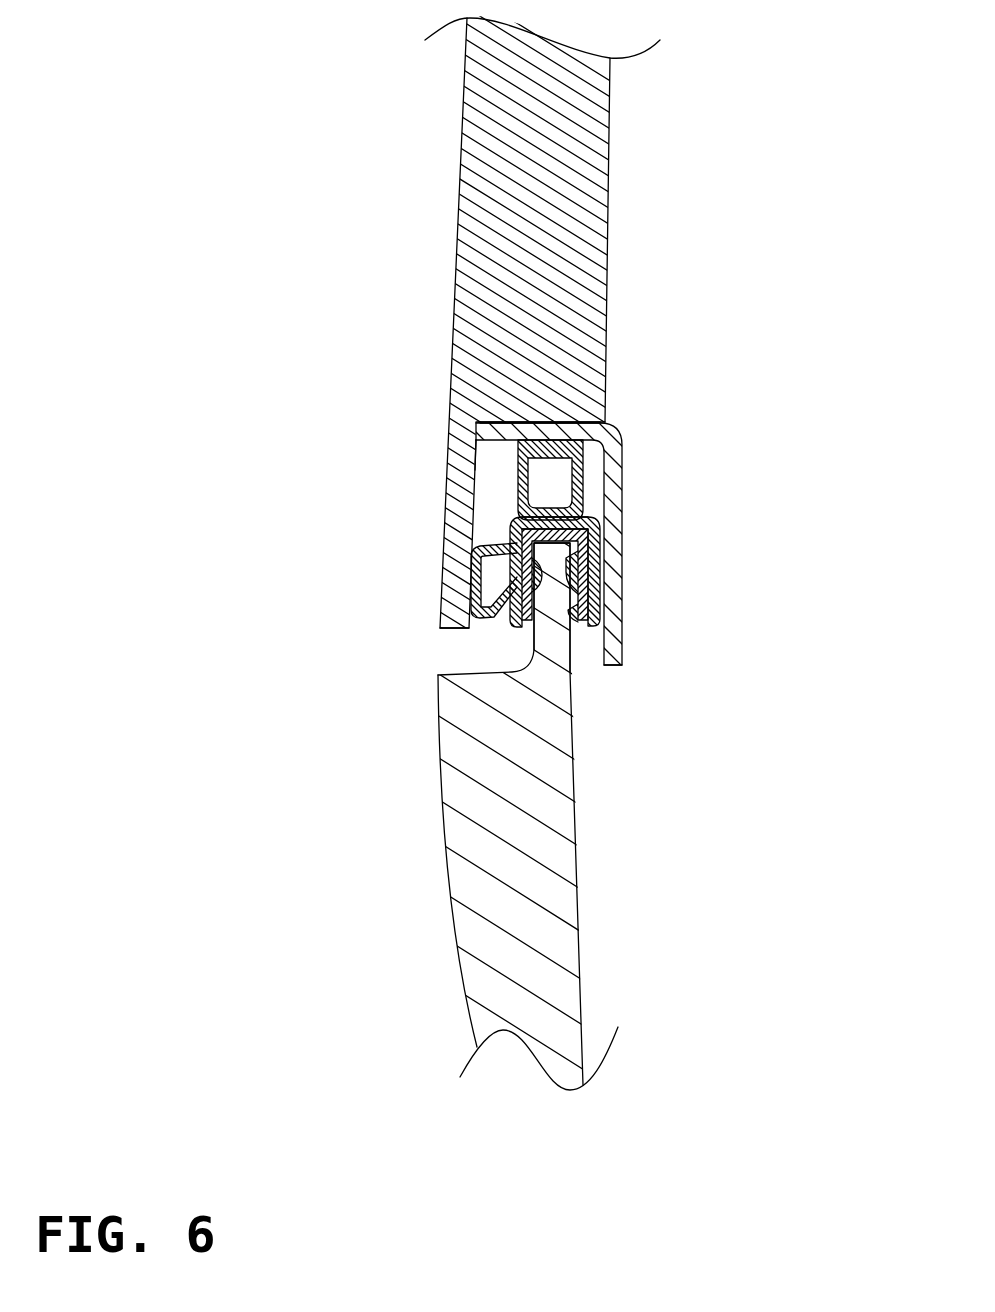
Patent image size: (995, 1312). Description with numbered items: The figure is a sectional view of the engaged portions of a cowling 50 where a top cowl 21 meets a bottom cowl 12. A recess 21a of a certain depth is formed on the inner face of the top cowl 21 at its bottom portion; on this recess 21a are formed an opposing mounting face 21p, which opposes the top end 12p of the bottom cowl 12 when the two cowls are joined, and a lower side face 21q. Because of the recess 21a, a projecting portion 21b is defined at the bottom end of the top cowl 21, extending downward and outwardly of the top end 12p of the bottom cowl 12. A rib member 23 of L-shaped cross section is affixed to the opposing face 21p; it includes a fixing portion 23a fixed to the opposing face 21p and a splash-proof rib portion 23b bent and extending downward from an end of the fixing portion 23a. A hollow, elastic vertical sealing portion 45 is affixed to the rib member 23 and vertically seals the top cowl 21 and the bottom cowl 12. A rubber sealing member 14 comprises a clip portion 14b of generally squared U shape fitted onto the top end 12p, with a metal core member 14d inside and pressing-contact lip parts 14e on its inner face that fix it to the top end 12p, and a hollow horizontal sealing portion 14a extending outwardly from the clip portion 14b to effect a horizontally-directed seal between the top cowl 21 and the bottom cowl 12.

The cowling 50 is at (380, 146).
The top cowl 21 is at (474, 194).
The recess 21a is at (300, 358).
The opposing mounting face 21p is at (530, 418).
The lower side face 21q is at (476, 462).
The projecting portion 21b is at (456, 585).
The rib member 23 is at (656, 445).
The fixing portion 23a is at (603, 432).
The splash-proof rib portion 23b is at (613, 643).
The vertical sealing portion 45 is at (578, 513).
The sealing member 14 is at (514, 632).
The horizontal sealing portion 14a is at (466, 548).
The clip portion 14b is at (588, 603).
The metal core member 14d is at (510, 527).
The pressing-contact lip parts 14e is at (585, 552).
The bottom cowl 12 is at (464, 848).
The top end of the bottom cowl 12p is at (547, 645).